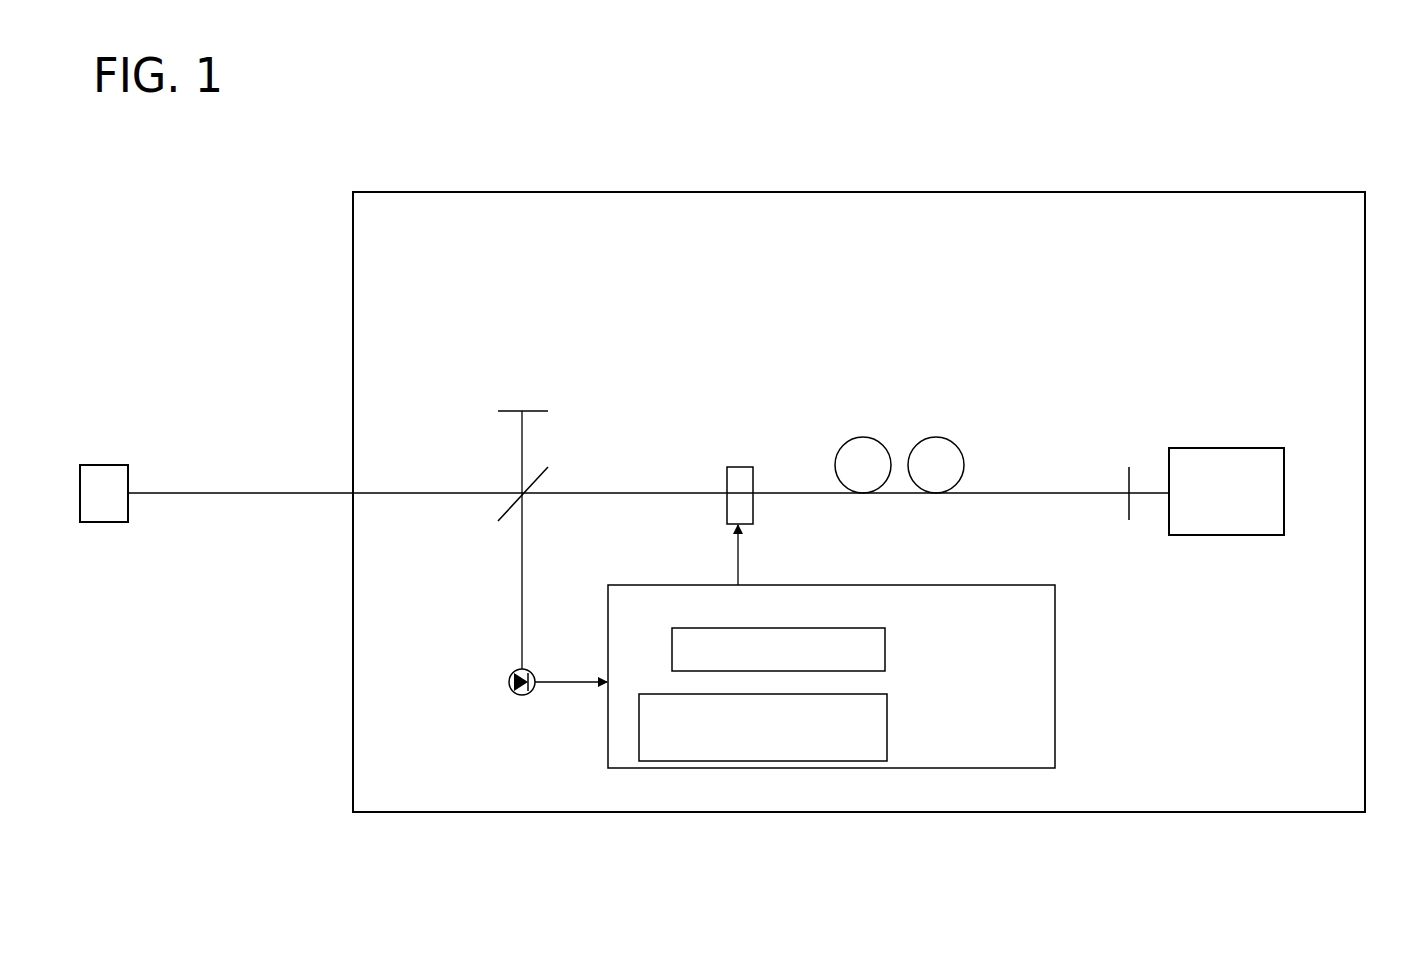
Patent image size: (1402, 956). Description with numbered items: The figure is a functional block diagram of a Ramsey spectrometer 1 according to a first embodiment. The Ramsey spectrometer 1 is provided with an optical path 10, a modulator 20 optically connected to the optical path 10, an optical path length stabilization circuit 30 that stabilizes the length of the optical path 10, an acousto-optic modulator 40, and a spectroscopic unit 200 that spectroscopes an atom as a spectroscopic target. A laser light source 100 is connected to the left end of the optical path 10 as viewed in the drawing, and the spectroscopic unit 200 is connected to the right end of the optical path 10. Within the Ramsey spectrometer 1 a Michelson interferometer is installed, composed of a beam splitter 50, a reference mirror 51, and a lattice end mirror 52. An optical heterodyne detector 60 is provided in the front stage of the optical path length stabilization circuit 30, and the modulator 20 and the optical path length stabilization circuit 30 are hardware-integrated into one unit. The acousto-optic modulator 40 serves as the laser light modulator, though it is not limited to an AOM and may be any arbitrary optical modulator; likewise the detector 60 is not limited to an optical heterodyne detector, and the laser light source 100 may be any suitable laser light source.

The Ramsey spectrometer 1 is at (859, 469).
The optical path 10 is at (924, 499).
The modulator 20 is at (810, 645).
The optical path length stabilization circuit 30 is at (793, 719).
The acousto-optic modulator 40 is at (758, 490).
The beam splitter 50 is at (502, 528).
The reference mirror 51 is at (532, 506).
The lattice end mirror 52 is at (1108, 469).
The optical heterodyne detector 60 is at (535, 715).
The laser light source 100 is at (81, 526).
The spectroscopic unit 200 is at (1234, 455).